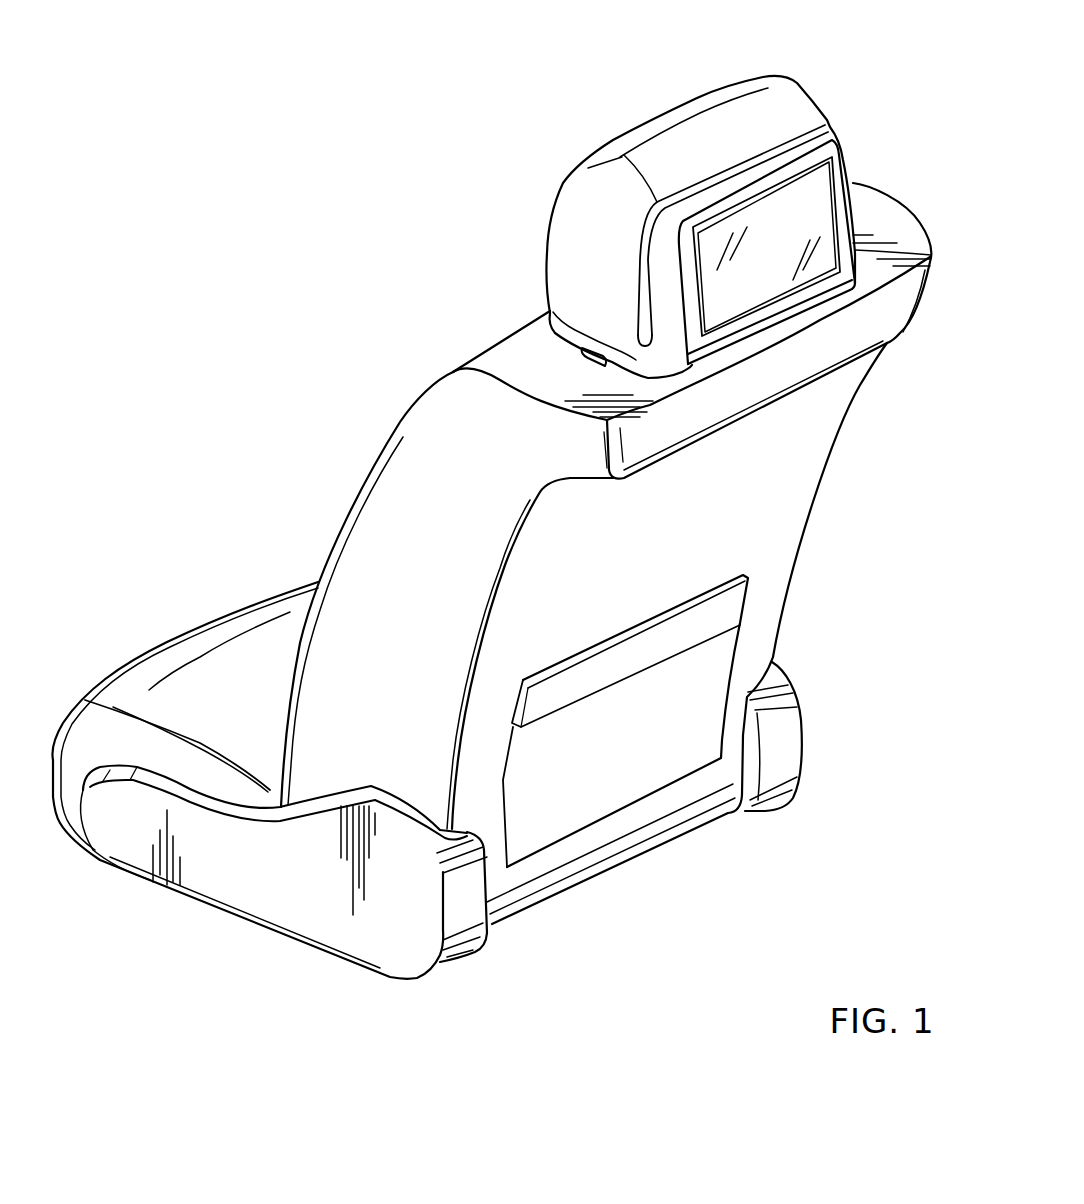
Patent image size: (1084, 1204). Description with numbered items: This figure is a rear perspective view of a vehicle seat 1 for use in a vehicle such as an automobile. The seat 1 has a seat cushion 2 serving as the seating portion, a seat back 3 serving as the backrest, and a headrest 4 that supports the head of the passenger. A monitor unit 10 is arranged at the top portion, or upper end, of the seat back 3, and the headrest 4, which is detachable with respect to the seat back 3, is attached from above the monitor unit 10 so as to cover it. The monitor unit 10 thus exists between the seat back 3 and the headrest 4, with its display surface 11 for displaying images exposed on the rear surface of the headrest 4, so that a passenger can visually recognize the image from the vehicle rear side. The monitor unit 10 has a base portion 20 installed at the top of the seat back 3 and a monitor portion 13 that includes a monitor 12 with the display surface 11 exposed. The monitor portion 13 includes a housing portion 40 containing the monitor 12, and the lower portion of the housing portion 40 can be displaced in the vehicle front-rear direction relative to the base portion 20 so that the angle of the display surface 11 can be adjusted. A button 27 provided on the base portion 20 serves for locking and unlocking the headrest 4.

The seat 1 is at (310, 493).
The seat cushion 2 is at (194, 674).
The seat back 3 is at (802, 493).
The headrest 4 is at (748, 100).
The monitor unit 10 is at (862, 211).
The display surface 11 is at (828, 260).
The monitor 12 is at (843, 177).
The monitor portion 13 is at (767, 252).
The base portion 20 is at (553, 322).
The button 27 is at (582, 356).
The housing portion 40 is at (664, 368).